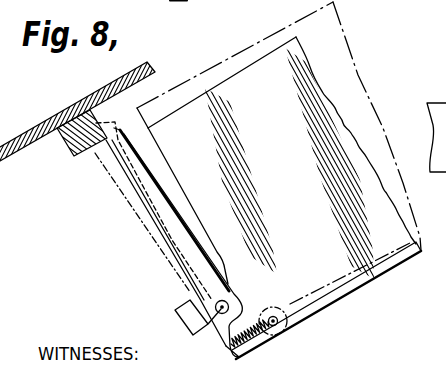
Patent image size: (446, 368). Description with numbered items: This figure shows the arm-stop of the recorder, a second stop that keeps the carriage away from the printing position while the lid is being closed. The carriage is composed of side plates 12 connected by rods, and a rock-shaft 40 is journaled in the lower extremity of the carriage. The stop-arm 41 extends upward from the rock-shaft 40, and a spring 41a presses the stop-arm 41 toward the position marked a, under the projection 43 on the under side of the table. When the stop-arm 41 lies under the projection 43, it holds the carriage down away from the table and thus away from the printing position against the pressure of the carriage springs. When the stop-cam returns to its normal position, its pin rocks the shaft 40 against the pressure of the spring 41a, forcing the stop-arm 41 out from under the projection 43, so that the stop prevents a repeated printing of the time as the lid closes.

The side plates 12 is at (291, 180).
The rock-shaft 40 is at (221, 310).
The stop-arm 41 is at (150, 207).
The spring 41a is at (260, 344).
The projection 43 is at (62, 148).
The position of the stop-arm a is at (108, 163).